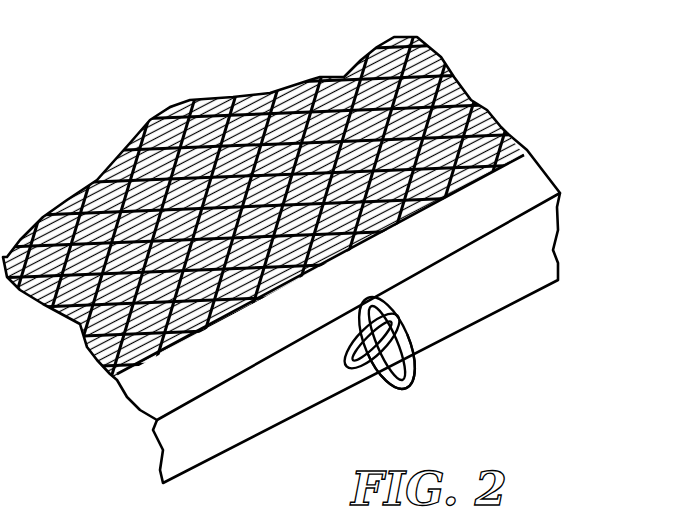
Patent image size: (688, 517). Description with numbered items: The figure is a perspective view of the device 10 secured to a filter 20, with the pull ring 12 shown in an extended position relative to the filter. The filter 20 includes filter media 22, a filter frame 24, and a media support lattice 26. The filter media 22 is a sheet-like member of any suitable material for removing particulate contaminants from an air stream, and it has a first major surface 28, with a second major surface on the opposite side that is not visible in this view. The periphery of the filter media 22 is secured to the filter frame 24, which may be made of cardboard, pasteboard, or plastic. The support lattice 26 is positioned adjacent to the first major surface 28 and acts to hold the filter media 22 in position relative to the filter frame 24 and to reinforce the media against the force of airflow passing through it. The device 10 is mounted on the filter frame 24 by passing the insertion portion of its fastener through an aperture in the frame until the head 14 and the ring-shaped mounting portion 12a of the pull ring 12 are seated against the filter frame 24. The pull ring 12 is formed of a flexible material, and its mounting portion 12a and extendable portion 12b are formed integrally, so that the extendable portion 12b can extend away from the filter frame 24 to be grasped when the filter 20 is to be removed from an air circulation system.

The filter 20 is at (344, 258).
The filter media 22 is at (344, 258).
The filter frame 24 is at (238, 340).
The media support lattice 26 is at (344, 250).
The first major surface 28 is at (344, 258).
The device 10 is at (407, 344).
The pull ring 12 is at (402, 344).
The head 14 is at (383, 338).
The ring-shaped mounting portion 12a is at (357, 372).
The extendable portion 12b is at (406, 379).